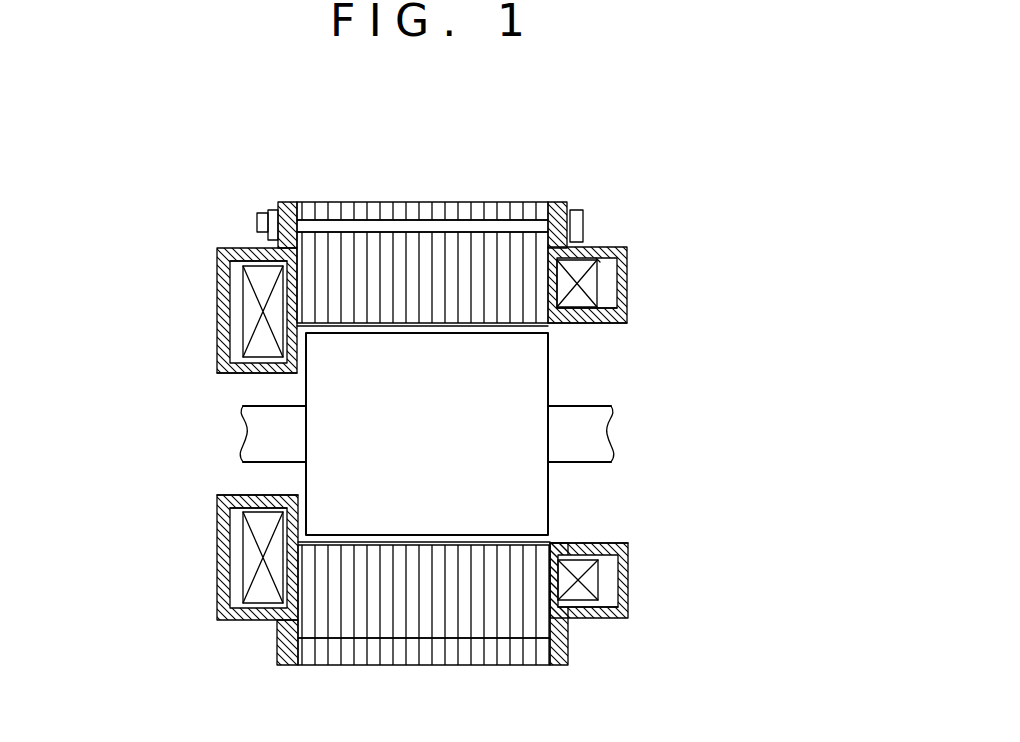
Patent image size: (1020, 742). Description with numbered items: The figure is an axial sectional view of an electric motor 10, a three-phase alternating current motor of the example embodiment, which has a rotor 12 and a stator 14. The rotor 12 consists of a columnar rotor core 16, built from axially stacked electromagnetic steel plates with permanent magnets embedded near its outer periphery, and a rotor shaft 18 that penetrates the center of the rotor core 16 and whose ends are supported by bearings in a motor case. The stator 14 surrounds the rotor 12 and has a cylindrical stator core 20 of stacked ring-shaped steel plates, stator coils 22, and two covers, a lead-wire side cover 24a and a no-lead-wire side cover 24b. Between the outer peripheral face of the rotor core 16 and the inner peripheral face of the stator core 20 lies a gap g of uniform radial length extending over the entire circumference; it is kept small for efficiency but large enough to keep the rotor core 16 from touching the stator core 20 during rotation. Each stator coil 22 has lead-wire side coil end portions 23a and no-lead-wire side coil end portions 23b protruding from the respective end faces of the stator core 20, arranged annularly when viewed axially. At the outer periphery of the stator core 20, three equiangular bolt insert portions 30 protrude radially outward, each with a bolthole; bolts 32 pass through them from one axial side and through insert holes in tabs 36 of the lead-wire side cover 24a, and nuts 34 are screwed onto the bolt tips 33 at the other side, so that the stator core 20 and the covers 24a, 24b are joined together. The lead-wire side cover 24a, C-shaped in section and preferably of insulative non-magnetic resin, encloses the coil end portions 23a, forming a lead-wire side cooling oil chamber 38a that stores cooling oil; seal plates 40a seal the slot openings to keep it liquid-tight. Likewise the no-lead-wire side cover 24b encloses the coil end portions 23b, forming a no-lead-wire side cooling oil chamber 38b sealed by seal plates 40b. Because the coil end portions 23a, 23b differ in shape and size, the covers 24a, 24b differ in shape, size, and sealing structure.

The electric motor 10 is at (598, 132).
The rotor 12 is at (635, 432).
The stator 14 is at (665, 260).
The rotor core 16 is at (549, 380).
The rotor shaft 18 is at (608, 405).
The stator core 20 is at (436, 200).
The stator coil 22 is at (598, 256).
The lead-wire side coil end portion 23a is at (598, 300).
The no-lead-wire side coil end portion 23b is at (248, 318).
The lead-wire side cover 24a is at (628, 253).
The no-lead-wire side cover 24b is at (217, 254).
The bolt insert portion 30 is at (380, 200).
The bolt 32 is at (577, 208).
The bolt tip 33 is at (260, 222).
The nut 34 is at (272, 210).
The tab 36 is at (292, 201).
The lead-wire side cooling oil chamber 38a is at (607, 282).
The no-lead-wire side cooling oil chamber 38b is at (240, 283).
The seal plate 40a is at (560, 325).
The seal plate 40b is at (290, 375).
The gap g is at (552, 330).